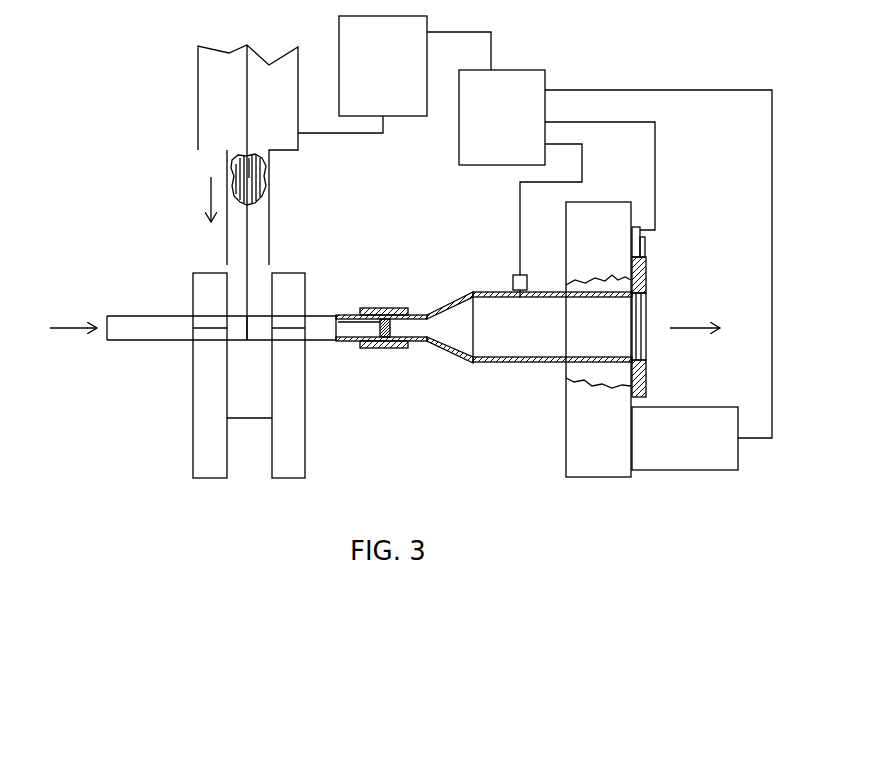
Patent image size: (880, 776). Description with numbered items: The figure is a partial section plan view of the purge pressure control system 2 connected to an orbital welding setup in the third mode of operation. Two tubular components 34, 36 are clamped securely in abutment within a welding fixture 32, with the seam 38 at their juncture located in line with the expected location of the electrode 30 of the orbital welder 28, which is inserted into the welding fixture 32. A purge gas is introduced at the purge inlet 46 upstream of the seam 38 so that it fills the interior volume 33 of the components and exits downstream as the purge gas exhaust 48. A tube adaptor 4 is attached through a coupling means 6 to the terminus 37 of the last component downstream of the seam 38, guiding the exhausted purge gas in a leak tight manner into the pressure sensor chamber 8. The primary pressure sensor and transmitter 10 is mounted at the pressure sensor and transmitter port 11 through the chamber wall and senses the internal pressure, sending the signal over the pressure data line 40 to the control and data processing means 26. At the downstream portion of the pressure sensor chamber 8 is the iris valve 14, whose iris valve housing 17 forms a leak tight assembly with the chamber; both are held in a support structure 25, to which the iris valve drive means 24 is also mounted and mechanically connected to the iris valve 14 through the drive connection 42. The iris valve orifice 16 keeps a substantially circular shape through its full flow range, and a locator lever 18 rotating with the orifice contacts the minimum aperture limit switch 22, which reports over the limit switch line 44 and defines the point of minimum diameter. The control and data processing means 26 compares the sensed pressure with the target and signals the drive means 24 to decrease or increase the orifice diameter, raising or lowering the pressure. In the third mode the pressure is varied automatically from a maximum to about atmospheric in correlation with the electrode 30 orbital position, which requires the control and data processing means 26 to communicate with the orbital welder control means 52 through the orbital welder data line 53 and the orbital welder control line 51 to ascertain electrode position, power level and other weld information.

The feed system 2 is at (446, 421).
The tube adaptor 4 is at (440, 352).
The coupling means 6 is at (380, 348).
The pressure sensor chamber 8 is at (535, 347).
The primary pressure sensor and transmitter 10 is at (519, 272).
The pressure sensor and transmitter port 11 is at (513, 292).
The iris valve 14 is at (646, 312).
The iris valve orifice 16 is at (646, 327).
The iris valve housing 17 is at (646, 380).
The locator lever 18 is at (640, 250).
The minimum aperture limit switch 22 is at (636, 226).
The iris valve drive means 24 is at (667, 435).
The support structure 25 is at (566, 440).
The control and data processing means 26 is at (515, 142).
The orbital welder 28 is at (208, 92).
The electrode 30 is at (260, 178).
The welding fixture 32 is at (205, 460).
The interior volume 33 is at (352, 322).
The tubular component 34 is at (172, 325).
The tubular component 36 is at (330, 312).
The terminus 37 is at (386, 310).
The seam 38 is at (247, 345).
The pressure data line 40 is at (520, 228).
The power line 42 is at (772, 215).
The thermocouple line 44 is at (655, 165).
The purge gas inlet 46 is at (107, 318).
The purge gas exhaust 48 is at (665, 318).
The orbital welder control line 51 is at (355, 133).
The orbital welder control means 52 is at (408, 80).
The orbital welder data line 53 is at (491, 55).